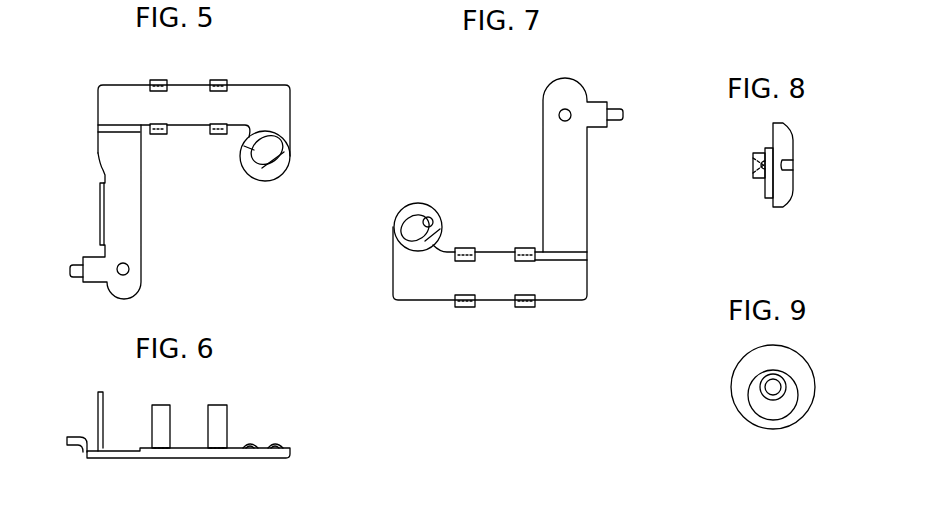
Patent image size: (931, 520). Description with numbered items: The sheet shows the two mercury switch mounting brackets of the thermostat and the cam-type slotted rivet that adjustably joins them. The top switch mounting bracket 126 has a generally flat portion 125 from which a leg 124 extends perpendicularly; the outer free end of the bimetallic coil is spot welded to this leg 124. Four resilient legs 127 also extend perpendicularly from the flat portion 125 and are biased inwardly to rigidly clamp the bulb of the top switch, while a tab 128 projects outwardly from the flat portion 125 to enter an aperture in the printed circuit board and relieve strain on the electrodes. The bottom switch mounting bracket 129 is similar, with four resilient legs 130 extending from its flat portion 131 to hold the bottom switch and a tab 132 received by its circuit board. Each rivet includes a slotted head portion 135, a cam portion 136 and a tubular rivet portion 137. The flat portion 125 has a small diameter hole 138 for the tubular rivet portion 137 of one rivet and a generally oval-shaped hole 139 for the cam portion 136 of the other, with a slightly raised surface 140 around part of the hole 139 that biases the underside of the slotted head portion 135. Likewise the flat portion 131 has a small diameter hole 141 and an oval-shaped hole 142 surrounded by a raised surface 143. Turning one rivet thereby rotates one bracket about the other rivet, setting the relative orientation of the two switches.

In FIG. 5, the leg 124 is at (100, 217).
In FIG. 6, the leg 124 is at (98, 420).
In FIG. 5, the flat portion 125 is at (283, 100).
In FIG. 6, the flat portion 125 is at (183, 457).
In FIG. 5, the top switch mounting bracket 126 is at (92, 101).
In FIG. 6, the top switch mounting bracket 126 is at (96, 381).
In FIG. 5, the resilient legs 127 is at (160, 124).
In FIG. 6, the resilient legs 127 is at (165, 418).
In FIG. 5, the tab 128 is at (72, 268).
In FIG. 6, the tab 128 is at (80, 443).
In FIG. 7, the bottom switch mounting bracket 129 is at (531, 102).
In FIG. 7, the resilient legs 130 is at (465, 262).
In FIG. 7, the flat portion 131 is at (423, 277).
In FIG. 7, the tab 132 is at (623, 115).
In FIG. 8, the slotted head portion 135 is at (789, 128).
In FIG. 9, the slotted head portion 135 is at (803, 352).
In FIG. 8, the cam portion 136 is at (769, 198).
In FIG. 9, the cam portion 136 is at (750, 412).
In FIG. 8, the tubular rivet portion 137 is at (757, 180).
In FIG. 9, the tubular rivet portion 137 is at (762, 393).
In FIG. 5, the small diameter hole 138 is at (130, 276).
In FIG. 5, the oval-shaped hole 139 is at (287, 148).
In FIG. 5, the raised surface 140 is at (288, 162).
In FIG. 6, the raised surface 140 is at (277, 447).
In FIG. 7, the small diameter hole 141 is at (565, 122).
In FIG. 7, the oval-shaped hole 142 is at (440, 223).
In FIG. 7, the raised surface 143 is at (393, 216).